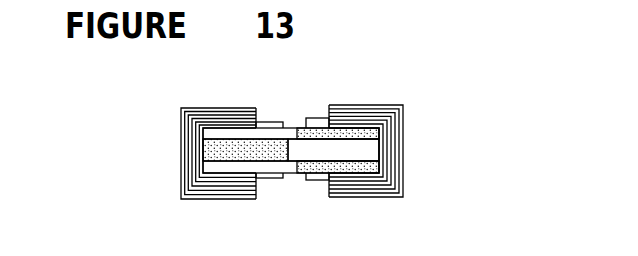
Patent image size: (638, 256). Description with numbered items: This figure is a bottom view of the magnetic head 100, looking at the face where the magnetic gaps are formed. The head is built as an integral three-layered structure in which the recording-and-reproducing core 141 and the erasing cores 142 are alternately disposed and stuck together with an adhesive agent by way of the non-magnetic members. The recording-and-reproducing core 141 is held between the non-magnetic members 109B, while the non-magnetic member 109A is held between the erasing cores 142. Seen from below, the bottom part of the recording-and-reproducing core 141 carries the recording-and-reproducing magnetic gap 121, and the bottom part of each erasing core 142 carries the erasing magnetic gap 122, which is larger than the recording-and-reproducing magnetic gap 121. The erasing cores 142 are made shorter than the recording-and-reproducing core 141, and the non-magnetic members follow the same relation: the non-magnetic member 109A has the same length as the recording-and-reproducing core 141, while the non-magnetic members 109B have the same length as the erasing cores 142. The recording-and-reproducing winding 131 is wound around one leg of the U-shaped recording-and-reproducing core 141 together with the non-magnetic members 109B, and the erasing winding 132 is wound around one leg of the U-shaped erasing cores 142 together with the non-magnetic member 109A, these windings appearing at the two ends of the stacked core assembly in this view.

The magnetic head 100 is at (422, 120).
The non-magnetic member 109A is at (367, 150).
The non-magnetic members 109B is at (290, 130).
The recording-and-reproducing magnetic gap 121 is at (270, 140).
The erasing magnetic gap 122 is at (338, 130).
The recording-and-reproducing winding 131 is at (217, 198).
The erasing winding 132 is at (400, 197).
The recording-and-reproducing core 141 is at (233, 142).
The erasing core 142 is at (370, 127).